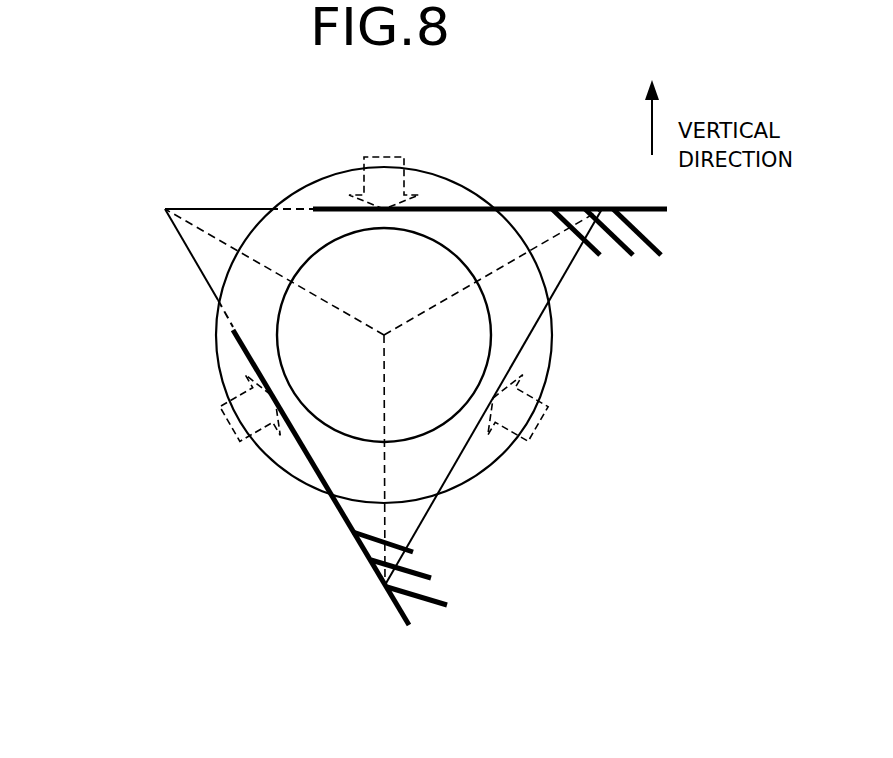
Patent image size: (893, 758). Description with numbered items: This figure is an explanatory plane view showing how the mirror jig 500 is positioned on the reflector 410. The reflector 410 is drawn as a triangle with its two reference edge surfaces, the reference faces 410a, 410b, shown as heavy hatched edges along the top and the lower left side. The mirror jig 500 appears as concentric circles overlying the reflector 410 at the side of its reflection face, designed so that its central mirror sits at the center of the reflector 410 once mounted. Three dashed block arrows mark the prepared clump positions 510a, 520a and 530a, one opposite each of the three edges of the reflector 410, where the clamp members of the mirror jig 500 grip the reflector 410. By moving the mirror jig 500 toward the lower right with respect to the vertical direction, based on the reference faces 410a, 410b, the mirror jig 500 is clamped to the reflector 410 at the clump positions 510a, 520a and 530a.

The reflector 410 is at (186, 243).
The reference face 410a is at (652, 207).
The reference face 410b is at (384, 586).
The mirror jig 500 is at (219, 372).
The clump position 510a is at (395, 156).
The clump position 520a is at (217, 420).
The clump position 530a is at (542, 428).